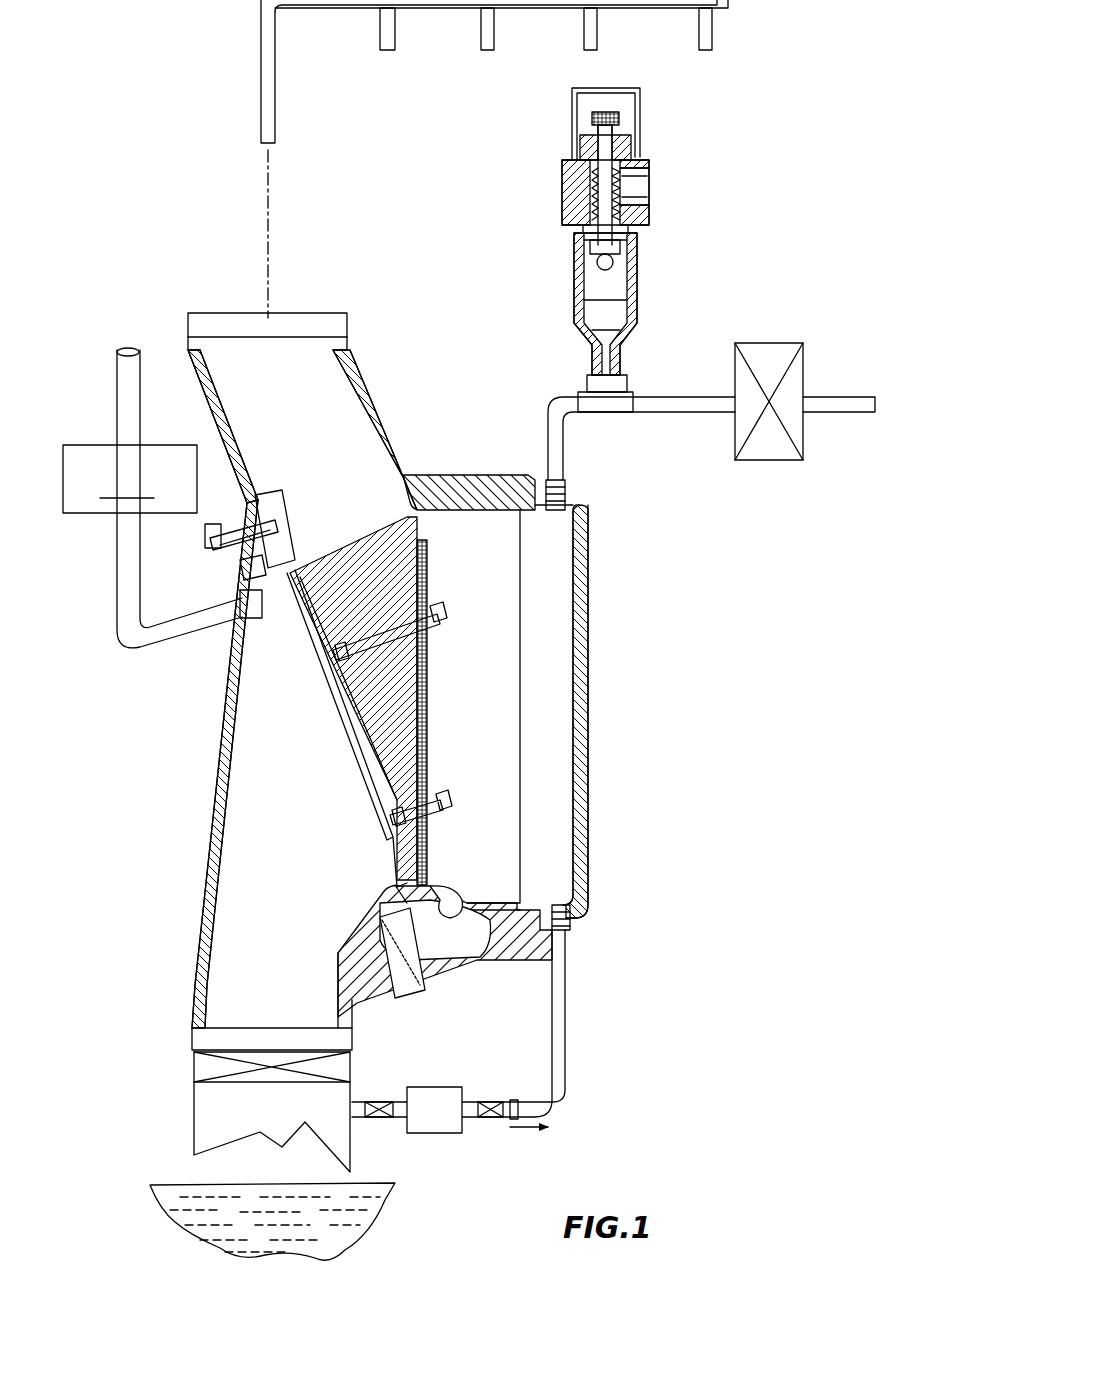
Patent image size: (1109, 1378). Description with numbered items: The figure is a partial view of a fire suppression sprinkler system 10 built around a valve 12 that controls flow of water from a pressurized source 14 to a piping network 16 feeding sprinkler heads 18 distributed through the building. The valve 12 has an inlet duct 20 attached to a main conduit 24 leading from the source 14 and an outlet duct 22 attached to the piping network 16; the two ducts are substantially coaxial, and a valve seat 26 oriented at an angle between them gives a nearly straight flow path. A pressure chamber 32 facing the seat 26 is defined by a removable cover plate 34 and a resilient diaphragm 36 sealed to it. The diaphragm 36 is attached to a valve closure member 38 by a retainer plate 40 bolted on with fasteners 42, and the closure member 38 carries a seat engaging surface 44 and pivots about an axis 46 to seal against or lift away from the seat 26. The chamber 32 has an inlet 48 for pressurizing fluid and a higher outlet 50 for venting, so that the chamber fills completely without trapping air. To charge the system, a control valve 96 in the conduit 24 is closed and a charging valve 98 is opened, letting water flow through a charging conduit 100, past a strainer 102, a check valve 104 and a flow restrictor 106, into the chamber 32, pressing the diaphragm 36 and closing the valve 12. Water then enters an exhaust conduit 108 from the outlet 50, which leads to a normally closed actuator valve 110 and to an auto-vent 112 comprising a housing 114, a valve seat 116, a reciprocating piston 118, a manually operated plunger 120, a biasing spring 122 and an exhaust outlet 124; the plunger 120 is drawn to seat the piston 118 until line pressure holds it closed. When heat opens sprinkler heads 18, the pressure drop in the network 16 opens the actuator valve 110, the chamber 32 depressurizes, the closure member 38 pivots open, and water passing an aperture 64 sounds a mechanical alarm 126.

The fire suppression sprinkler system 10 is at (718, 634).
The valve 12 is at (205, 745).
The pressurized source 14 is at (170, 1198).
The piping network 16 is at (261, 40).
The sprinkler heads 18 is at (735, 12).
The inlet duct 20 is at (245, 895).
The outlet duct 22 is at (335, 388).
The main conduit 24 is at (195, 1120).
The valve seat 26 is at (325, 705).
The pressure chamber 32 is at (492, 703).
The cover plate 34 is at (590, 700).
The diaphragm 36 is at (468, 515).
The valve closure member 38 is at (385, 780).
The retainer plate 40 is at (428, 748).
The fasteners 42 is at (445, 797).
The seat engaging surface 44 is at (345, 750).
The axis 46 is at (445, 900).
The inlet 48 is at (570, 920).
The outlet 50 is at (560, 488).
The aperture 64 is at (270, 612).
The control valve 96 is at (195, 1065).
The charging valve 98 is at (380, 1120).
The charging conduit 100 is at (565, 1020).
The strainer 102 is at (430, 1095).
The check valve 104 is at (490, 1120).
The flow restrictor 106 is at (515, 1100).
The exhaust conduit 108 is at (690, 410).
The actuator valve 110 is at (772, 462).
The auto-vent 112 is at (604, 250).
The housing 114 is at (565, 182).
The valve seat 116 is at (615, 245).
The reciprocating piston 118 is at (615, 258).
The manually operated plunger 120 is at (595, 118).
The spring 122 is at (600, 205).
The exhaust outlet 124 is at (628, 182).
The mechanical alarm 126 is at (162, 498).